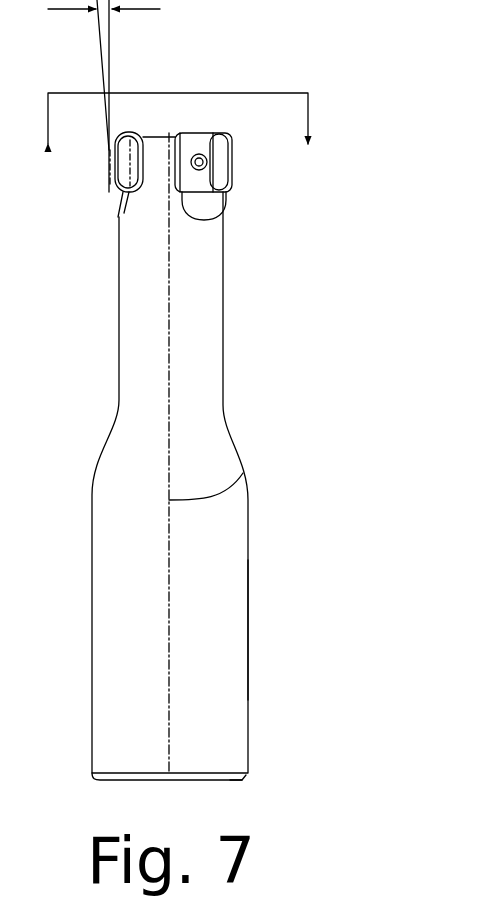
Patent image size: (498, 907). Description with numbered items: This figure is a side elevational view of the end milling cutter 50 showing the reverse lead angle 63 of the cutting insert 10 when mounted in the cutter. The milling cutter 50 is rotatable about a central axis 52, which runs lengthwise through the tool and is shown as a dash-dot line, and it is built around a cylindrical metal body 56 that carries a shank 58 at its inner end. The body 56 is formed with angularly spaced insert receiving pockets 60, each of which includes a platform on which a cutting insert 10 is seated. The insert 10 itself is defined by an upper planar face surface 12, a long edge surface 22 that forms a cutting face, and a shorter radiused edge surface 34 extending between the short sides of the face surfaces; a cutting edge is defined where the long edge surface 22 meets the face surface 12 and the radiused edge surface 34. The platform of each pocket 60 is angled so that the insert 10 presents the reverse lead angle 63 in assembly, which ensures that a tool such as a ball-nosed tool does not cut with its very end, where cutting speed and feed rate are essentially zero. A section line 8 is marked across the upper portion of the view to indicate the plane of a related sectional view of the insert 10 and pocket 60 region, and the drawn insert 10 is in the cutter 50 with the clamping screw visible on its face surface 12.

The section line 8- 8 is at (176, 128).
The cutting insert 10 is at (100, 182).
The first planar face surface 12 is at (207, 146).
The first edge surface 22 is at (125, 157).
The first radiused edge surface 34 is at (198, 129).
The end milling cutter 50 is at (278, 540).
The central axis 52 is at (243, 473).
The cylindrical metal body 56 is at (222, 617).
The shank 58 is at (246, 779).
The insert receiving pocket 60 is at (208, 222).
The reverse lead angle 63 is at (120, 96).